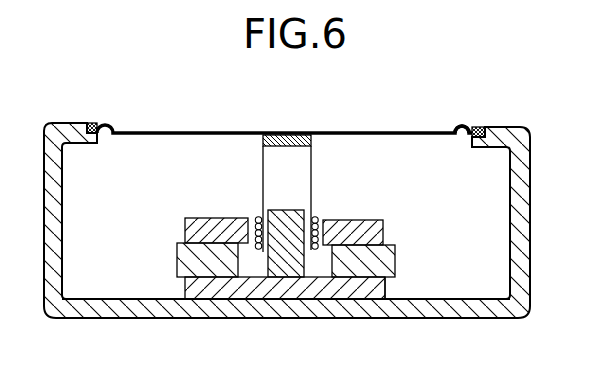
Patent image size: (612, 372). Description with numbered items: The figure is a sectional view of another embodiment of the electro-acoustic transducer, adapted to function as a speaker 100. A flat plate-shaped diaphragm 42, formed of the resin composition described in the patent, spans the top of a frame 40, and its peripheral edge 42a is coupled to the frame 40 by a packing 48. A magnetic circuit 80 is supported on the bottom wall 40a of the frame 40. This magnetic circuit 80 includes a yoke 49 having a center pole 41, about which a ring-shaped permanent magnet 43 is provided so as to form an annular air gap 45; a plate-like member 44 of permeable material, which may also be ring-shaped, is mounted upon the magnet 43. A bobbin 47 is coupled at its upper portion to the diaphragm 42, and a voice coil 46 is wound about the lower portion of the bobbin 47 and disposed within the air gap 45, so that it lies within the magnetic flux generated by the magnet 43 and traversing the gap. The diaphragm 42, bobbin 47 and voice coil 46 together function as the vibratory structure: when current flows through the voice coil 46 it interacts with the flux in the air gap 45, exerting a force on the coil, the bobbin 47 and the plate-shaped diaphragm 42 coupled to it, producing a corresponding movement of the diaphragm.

The speaker 100 is at (169, 130).
The frame 40 is at (528, 217).
The bottom wall 40a is at (467, 302).
The center pole 41 is at (267, 253).
The diaphragm 42 is at (201, 131).
The peripheral edge 42a is at (461, 125).
The ring-shaped permanent magnet 43 is at (178, 257).
The plate-like member 44 is at (377, 233).
The annular air gap 45 is at (317, 265).
The voice coil 46 is at (318, 223).
The bobbin 47 is at (313, 165).
The packing 48 is at (478, 125).
The yoke 49 is at (366, 287).
The magnetic circuit 80 is at (384, 287).